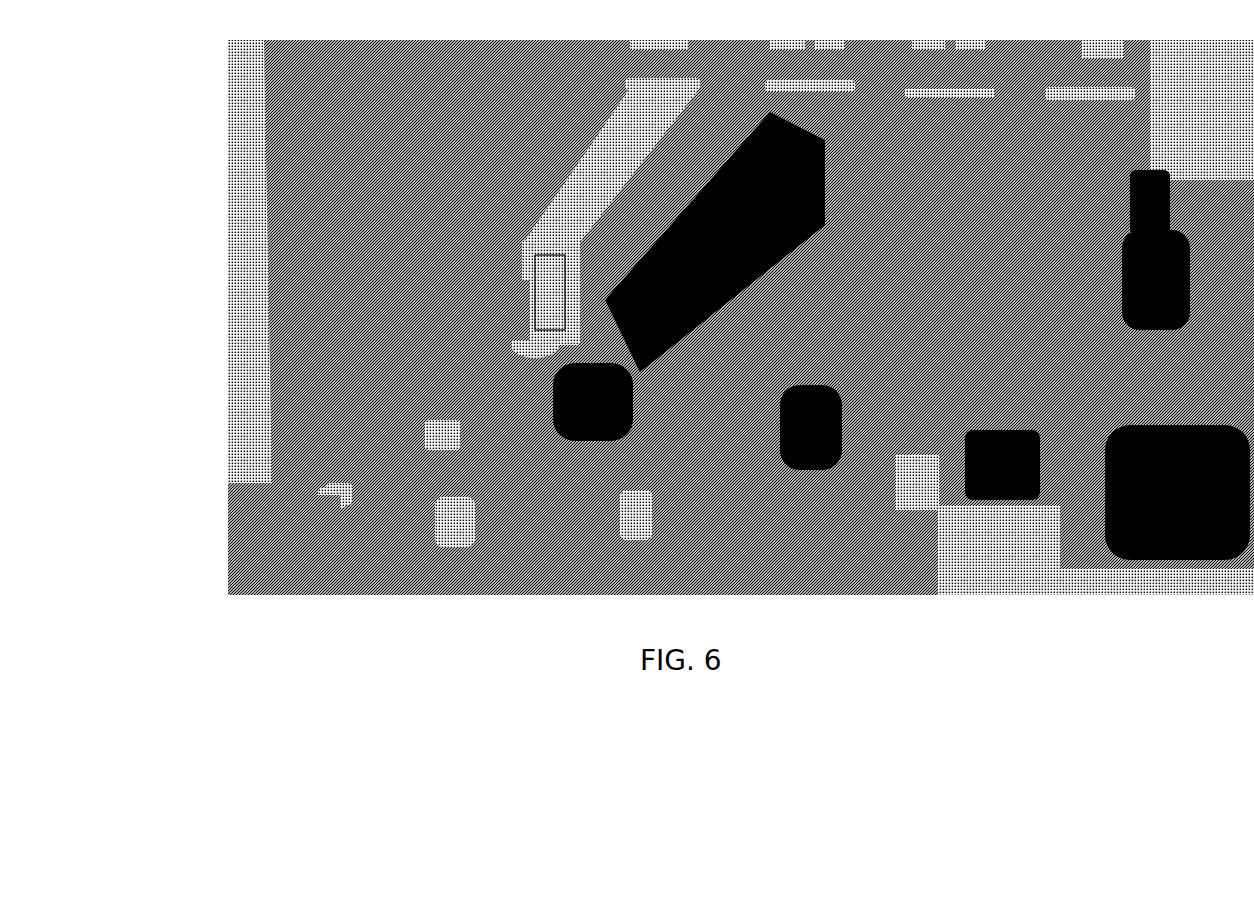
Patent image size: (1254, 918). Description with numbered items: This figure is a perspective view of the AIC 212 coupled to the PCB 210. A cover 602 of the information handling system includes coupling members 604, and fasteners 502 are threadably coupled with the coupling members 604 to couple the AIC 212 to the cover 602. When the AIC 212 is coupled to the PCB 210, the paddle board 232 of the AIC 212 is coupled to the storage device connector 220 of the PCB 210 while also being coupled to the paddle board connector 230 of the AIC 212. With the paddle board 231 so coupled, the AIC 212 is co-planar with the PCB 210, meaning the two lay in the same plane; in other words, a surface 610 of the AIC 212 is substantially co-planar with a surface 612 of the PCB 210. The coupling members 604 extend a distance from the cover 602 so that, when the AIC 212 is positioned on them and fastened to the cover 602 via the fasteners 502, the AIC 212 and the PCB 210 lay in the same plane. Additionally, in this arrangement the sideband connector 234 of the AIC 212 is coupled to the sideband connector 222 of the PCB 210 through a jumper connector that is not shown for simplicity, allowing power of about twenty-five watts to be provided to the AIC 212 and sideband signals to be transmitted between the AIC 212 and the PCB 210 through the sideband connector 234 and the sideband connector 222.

The PCB 210 is at (908, 588).
The AIC 212 is at (296, 504).
The storage device connector 220 is at (585, 453).
The sideband connector 222 is at (672, 507).
The paddle board connector 230 is at (407, 401).
The paddle board 231 is at (483, 380).
The paddle board 232 is at (522, 209).
The sideband connector 234 is at (395, 488).
The fasteners 502 is at (504, 343).
The cover 602 is at (228, 555).
The coupling members 604 is at (294, 558).
The surface 610 is at (503, 312).
The surface 612 is at (547, 497).